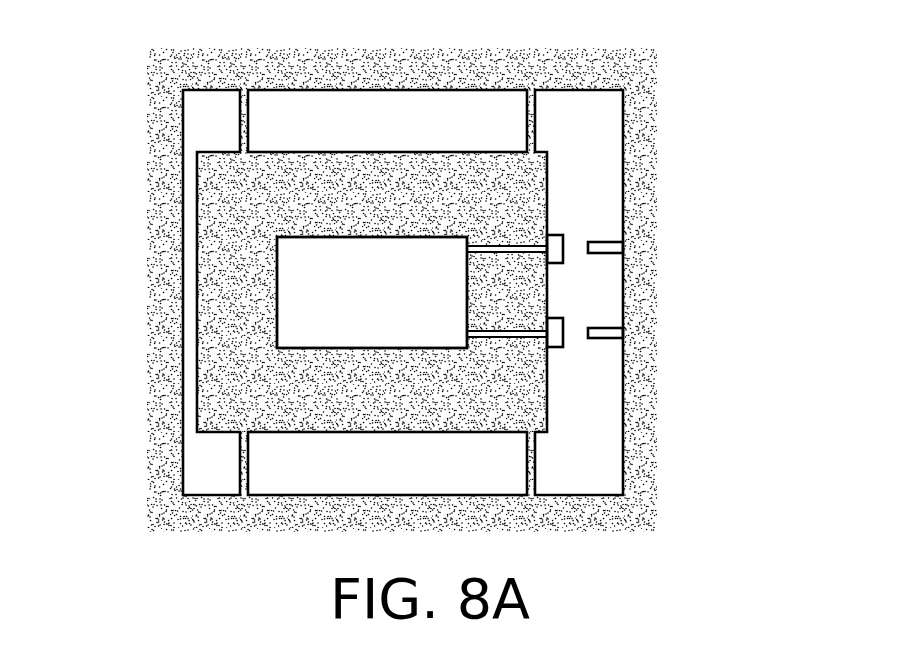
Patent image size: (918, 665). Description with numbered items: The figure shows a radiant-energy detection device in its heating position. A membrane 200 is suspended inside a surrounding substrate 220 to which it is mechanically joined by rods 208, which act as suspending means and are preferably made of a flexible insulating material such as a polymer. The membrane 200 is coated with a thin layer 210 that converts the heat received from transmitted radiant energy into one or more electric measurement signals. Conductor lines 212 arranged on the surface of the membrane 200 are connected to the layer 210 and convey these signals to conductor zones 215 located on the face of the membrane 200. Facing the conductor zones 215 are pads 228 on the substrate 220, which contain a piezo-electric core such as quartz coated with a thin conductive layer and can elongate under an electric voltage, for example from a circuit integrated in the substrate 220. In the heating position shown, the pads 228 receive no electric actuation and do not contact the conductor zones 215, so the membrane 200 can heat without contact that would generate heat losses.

The membrane 200 is at (223, 232).
The rods 208 is at (248, 126).
The thin layer 210 is at (307, 310).
The conductor lines 212 is at (512, 253).
The conductor zones 215 is at (556, 240).
The substrate 220 is at (639, 118).
The pads 228 is at (602, 254).